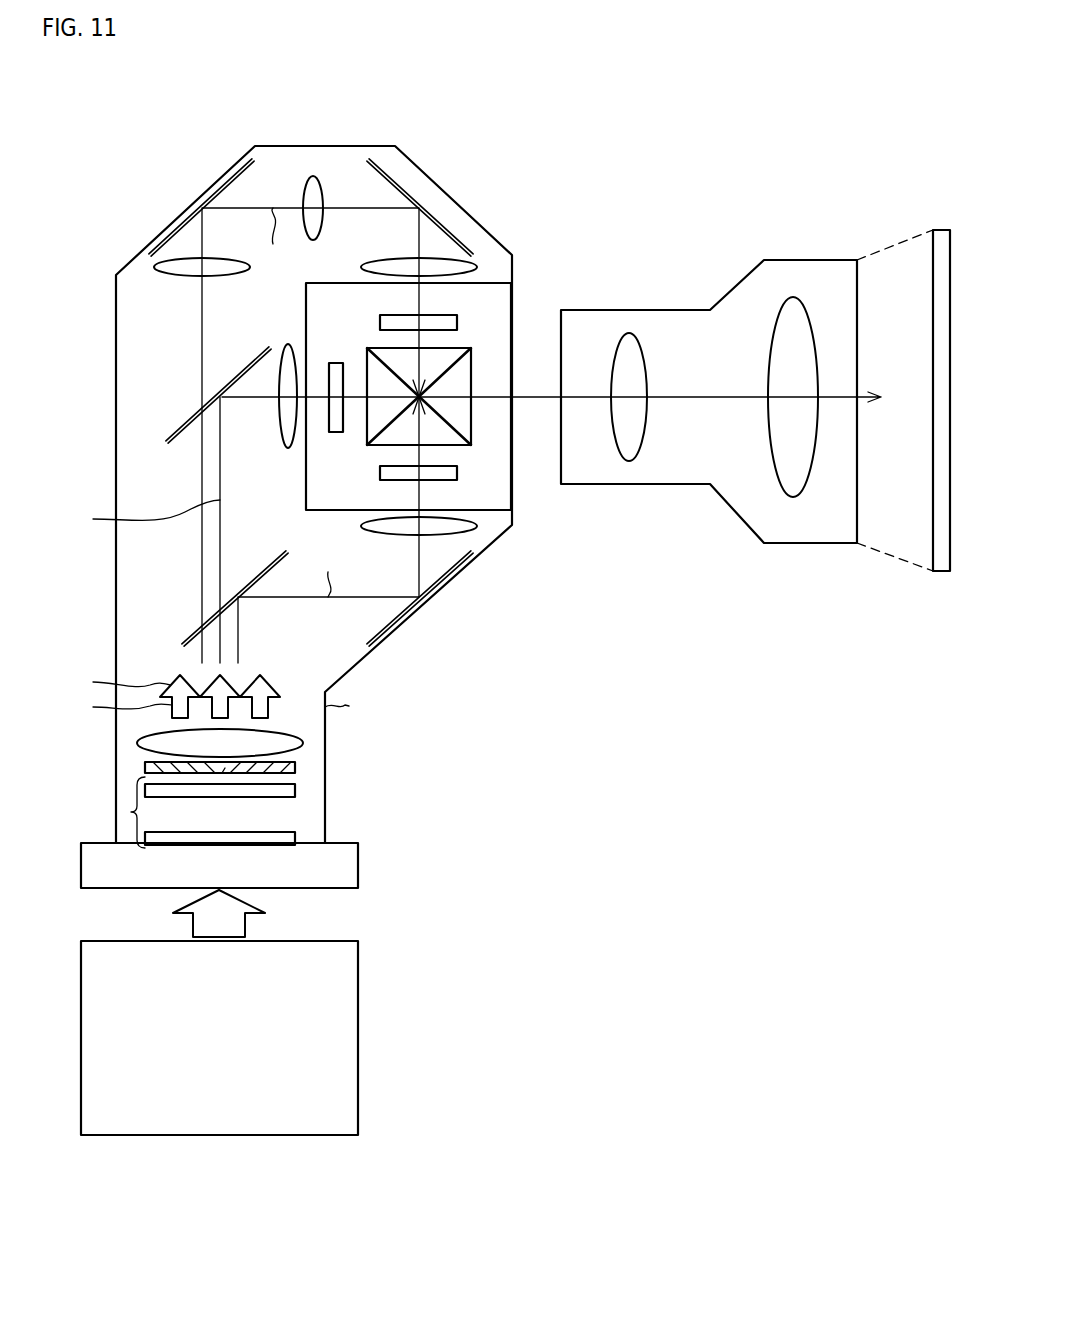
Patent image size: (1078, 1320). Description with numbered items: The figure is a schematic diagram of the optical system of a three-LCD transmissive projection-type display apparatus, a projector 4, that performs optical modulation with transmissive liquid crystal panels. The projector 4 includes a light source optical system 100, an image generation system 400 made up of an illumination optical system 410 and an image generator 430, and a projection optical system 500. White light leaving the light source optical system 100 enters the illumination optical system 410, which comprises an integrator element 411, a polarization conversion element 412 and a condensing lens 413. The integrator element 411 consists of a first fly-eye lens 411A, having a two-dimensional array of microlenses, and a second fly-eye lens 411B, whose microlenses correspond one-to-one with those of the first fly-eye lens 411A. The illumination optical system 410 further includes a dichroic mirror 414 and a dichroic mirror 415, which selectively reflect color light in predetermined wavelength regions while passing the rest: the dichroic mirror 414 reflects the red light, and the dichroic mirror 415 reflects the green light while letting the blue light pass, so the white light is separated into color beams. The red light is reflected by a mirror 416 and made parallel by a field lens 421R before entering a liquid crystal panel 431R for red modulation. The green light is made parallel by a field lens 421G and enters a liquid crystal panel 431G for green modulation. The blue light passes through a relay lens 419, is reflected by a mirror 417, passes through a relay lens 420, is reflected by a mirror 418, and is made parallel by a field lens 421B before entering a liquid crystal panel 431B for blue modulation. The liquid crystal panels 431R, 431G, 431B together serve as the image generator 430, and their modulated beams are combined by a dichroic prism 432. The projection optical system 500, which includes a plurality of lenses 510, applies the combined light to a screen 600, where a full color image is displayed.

The projector 4 is at (606, 109).
The light source optical system 100 is at (358, 1040).
The image generation system 400 is at (655, 680).
The illumination optical system 410 is at (385, 632).
The integrator element 411 is at (130, 812).
The first fly-eye lens 411A is at (275, 832).
The second fly-eye lens 411B is at (297, 790).
The polarization conversion element 412 is at (297, 768).
The condensing lens 413 is at (325, 746).
The dichroic mirror 414 is at (196, 632).
The dichroic mirror 415 is at (200, 412).
The mirror 416 is at (445, 585).
The mirror 417 is at (195, 212).
The mirror 418 is at (427, 213).
The relay lens 419 is at (136, 262).
The relay lens 420 is at (313, 176).
The field lens 421B is at (477, 266).
The field lens 421G is at (283, 440).
The field lens 421R is at (477, 528).
The image generator 430 is at (567, 613).
The liquid crystal panel 431B is at (458, 321).
The liquid crystal panel 431G is at (340, 362).
The liquid crystal panel 431R is at (458, 474).
The dichroic prism 432 is at (471, 370).
The projection optical system 500 is at (790, 544).
The lenses 510 is at (793, 297).
The screen 600 is at (945, 572).